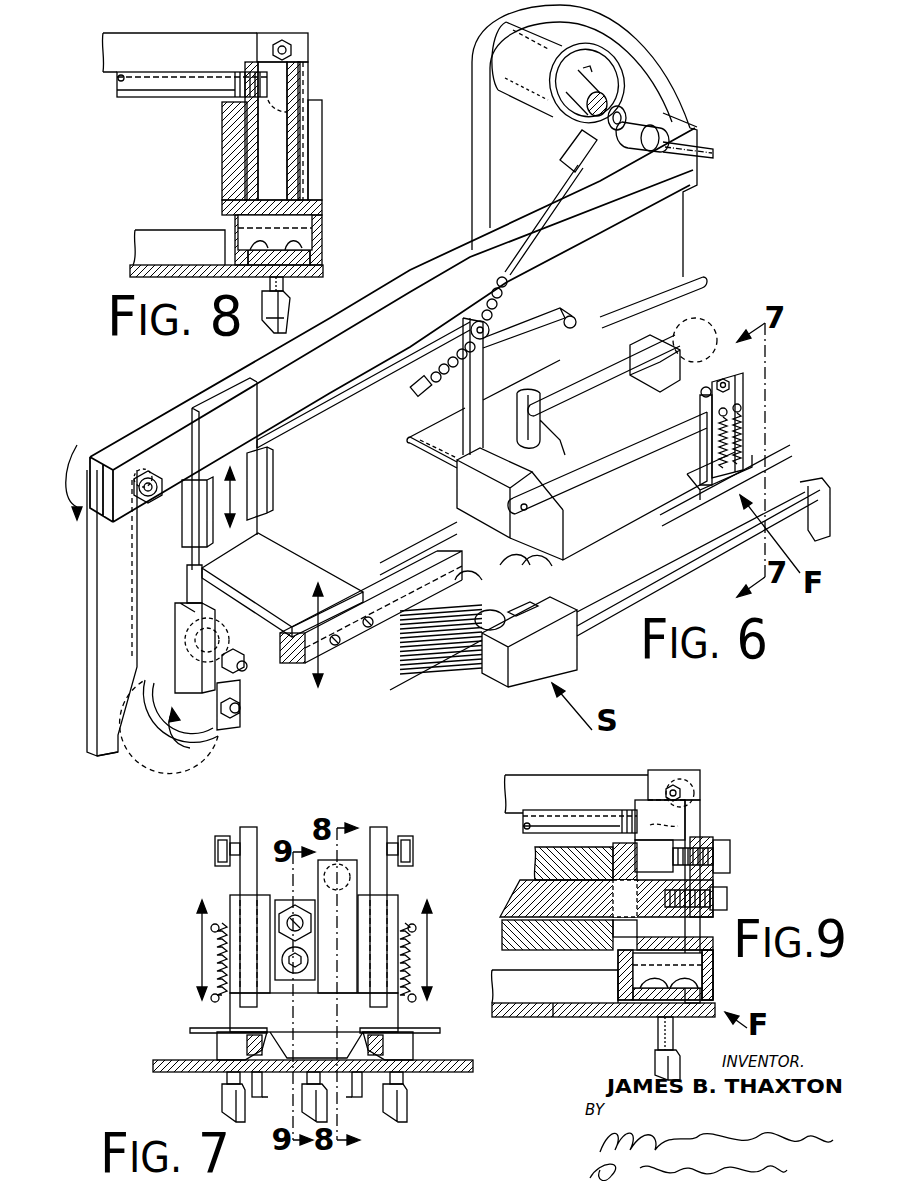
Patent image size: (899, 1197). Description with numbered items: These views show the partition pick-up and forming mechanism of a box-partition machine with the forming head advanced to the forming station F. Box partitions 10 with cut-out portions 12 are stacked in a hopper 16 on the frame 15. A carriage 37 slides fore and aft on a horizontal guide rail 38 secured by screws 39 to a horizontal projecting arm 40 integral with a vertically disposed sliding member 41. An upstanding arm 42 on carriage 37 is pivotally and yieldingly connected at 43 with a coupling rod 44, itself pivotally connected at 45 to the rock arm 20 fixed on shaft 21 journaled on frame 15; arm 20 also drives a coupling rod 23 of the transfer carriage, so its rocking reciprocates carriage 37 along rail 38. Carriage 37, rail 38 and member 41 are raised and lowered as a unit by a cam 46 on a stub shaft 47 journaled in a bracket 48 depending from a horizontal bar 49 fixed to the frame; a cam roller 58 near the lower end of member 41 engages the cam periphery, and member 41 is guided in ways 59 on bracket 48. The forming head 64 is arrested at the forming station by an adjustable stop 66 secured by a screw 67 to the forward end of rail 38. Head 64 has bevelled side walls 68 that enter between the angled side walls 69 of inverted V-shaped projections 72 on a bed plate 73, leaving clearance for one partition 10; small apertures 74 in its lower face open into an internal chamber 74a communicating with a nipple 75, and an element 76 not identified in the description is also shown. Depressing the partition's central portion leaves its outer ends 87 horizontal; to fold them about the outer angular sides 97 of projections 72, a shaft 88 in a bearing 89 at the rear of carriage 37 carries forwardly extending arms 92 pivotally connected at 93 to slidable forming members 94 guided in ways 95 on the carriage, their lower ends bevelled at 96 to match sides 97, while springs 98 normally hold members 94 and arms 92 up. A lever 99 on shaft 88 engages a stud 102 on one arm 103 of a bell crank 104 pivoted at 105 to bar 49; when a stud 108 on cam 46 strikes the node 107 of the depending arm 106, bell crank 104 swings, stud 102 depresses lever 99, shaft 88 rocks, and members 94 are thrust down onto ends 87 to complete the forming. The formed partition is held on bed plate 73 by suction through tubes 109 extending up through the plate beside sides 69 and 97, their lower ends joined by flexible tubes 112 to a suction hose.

In FIG. 6, the box partitions 10 is at (430, 640).
In FIG. 7, the box partitions 10 is at (340, 1020).
In FIG. 6, the cut-out portions 12 is at (486, 618).
In FIG. 6, the frame 15 is at (472, 188).
In FIG. 6, the hopper 16 is at (497, 680).
In FIG. 6, the rock arm 20 is at (624, 108).
In FIG. 6, the shaft 21 is at (618, 88).
In FIG. 6, the coupling rod 23 is at (698, 145).
In FIG. 6, the carriage 37 is at (604, 522).
In FIG. 9, the carriage 37 is at (547, 863).
In FIG. 6, the horizontal guide rail 38 is at (375, 583).
In FIG. 9, the horizontal guide rail 38 is at (530, 892).
In FIG. 6, the screws 39 is at (340, 645).
In FIG. 6, the horizontal projecting arm 40 is at (286, 566).
In FIG. 6, the sliding member 41 is at (220, 395).
In FIG. 6, the upstanding arm 42 is at (470, 397).
In FIG. 6, the pivotal yielding connection 43 is at (490, 325).
In FIG. 6, the coupling rod 44 is at (540, 225).
In FIG. 6, the pivotal connection 45 is at (655, 118).
In FIG. 6, the cam 46 is at (190, 758).
In FIG. 6, the stub shaft 47 is at (245, 707).
In FIG. 6, the bracket 48 is at (187, 572).
In FIG. 6, the bar 49 is at (400, 288).
In FIG. 6, the cam roller 58 is at (175, 612).
In FIG. 6, the ways 59 is at (267, 490).
In FIG. 8, the forming head 64 is at (322, 245).
In FIG. 7, the forming head 64 is at (330, 1038).
In FIG. 9, the forming head 64 is at (712, 993).
In FIG. 6, the adjustable stop 66 is at (704, 386).
In FIG. 9, the adjustable stop 66 is at (665, 845).
In FIG. 9, the screw 67 is at (728, 898).
In FIG. 7, the bevelled side walls 68 is at (287, 1045).
In FIG. 7, the angled side walls 69 is at (258, 1078).
In FIG. 9, the angled side walls 69 is at (565, 1005).
In FIG. 8, the inverted V-shaped projections 72 is at (152, 244).
In FIG. 6, the inverted V-shaped projections 72 is at (535, 570).
In FIG. 7, the inverted V-shaped projections 72 is at (257, 1090).
In FIG. 9, the inverted V-shaped projections 72 is at (515, 970).
In FIG. 8, the bed plate 73 is at (130, 270).
In FIG. 6, the bed plate 73 is at (690, 566).
In FIG. 7, the bed plate 73 is at (153, 1066).
In FIG. 9, the bed plate 73 is at (525, 1012).
In FIG. 8, the apertures 74 is at (275, 234).
In FIG. 9, the apertures 74 is at (633, 978).
In FIG. 8, the chamber 74a is at (292, 225).
In FIG. 9, the chamber 74a is at (713, 980).
In FIG. 8, the nipple 75 is at (165, 75).
In FIG. 6, the nipple 75 is at (604, 390).
In FIG. 9, the nipple 75 is at (570, 815).
In FIG. 6, the hook 76 is at (548, 432).
In FIG. 7, the outer ends 87 is at (190, 1030).
In FIG. 6, the shaft 88 is at (432, 468).
In FIG. 6, the bearing 89 is at (470, 492).
In FIG. 9, the bearing 89 is at (607, 935).
In FIG. 8, the arms 92 is at (133, 47).
In FIG. 6, the arms 92 is at (595, 395).
In FIG. 7, the arms 92 is at (222, 835).
In FIG. 9, the arms 92 is at (548, 785).
In FIG. 8, the pivotal connection 93 is at (287, 48).
In FIG. 6, the pivotal connection 93 is at (729, 385).
In FIG. 7, the pivotal connection 93 is at (237, 843).
In FIG. 9, the pivotal connection 93 is at (690, 782).
In FIG. 8, the forming members 94 is at (305, 60).
In FIG. 6, the forming members 94 is at (686, 300).
In FIG. 7, the forming members 94 is at (245, 882).
In FIG. 9, the forming members 94 is at (696, 805).
In FIG. 6, the ways 95 is at (742, 400).
In FIG. 7, the ways 95 is at (238, 908).
In FIG. 7, the bevelled lower ends 96 is at (240, 1010).
In FIG. 6, the outer angular sides 97 is at (560, 562).
In FIG. 7, the outer angular sides 97 is at (235, 1045).
In FIG. 6, the springs 98 is at (745, 437).
In FIG. 7, the springs 98 is at (222, 948).
In FIG. 6, the lever 99 is at (640, 312).
In FIG. 6, the stud 102 is at (577, 312).
In FIG. 6, the arm 103 is at (356, 420).
In FIG. 6, the bell crank 104 is at (80, 473).
In FIG. 6, the pivot 105 is at (150, 505).
In FIG. 6, the depending arm 106 is at (122, 597).
In FIG. 6, the node 107 is at (122, 748).
In FIG. 6, the stud 108 is at (185, 650).
In FIG. 8, the tubes 109 is at (285, 290).
In FIG. 7, the tubes 109 is at (227, 1080).
In FIG. 9, the tubes 109 is at (658, 1027).
In FIG. 8, the flexible tubes 112 is at (272, 322).
In FIG. 7, the flexible tubes 112 is at (222, 1105).
In FIG. 9, the flexible tubes 112 is at (676, 1052).